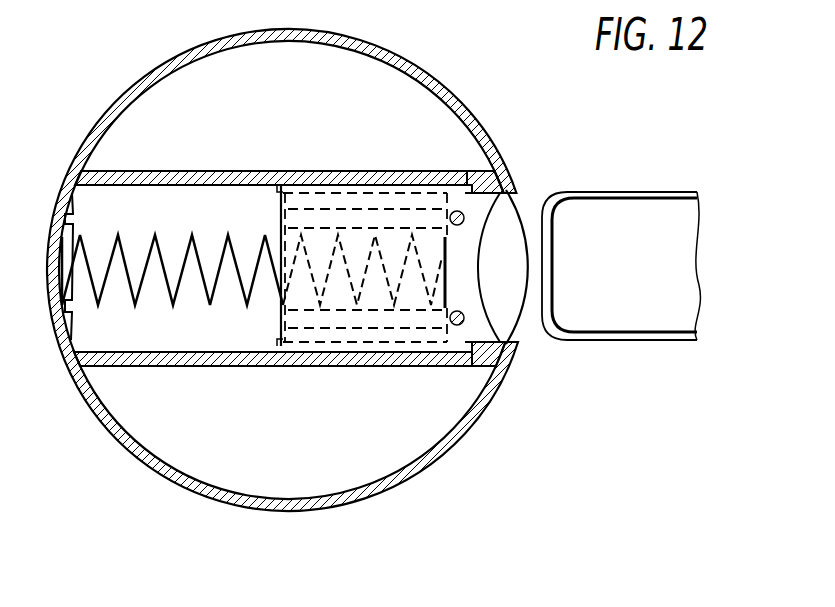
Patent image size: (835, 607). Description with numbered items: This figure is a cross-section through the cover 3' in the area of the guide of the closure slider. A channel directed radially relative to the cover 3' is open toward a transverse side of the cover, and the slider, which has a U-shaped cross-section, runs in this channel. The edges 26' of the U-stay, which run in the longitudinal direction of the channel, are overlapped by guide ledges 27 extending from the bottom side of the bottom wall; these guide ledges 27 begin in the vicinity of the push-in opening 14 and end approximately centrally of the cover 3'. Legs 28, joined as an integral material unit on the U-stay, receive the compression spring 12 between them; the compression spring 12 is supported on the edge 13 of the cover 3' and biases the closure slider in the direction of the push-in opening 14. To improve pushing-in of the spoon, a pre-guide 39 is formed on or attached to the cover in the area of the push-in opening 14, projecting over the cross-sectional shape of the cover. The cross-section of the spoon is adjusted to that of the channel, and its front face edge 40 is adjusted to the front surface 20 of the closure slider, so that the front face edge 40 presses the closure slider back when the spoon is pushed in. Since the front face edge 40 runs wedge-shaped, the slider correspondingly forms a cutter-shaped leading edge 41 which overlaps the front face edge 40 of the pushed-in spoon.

The cover 3' is at (282, 300).
The compression spring 12 is at (200, 287).
The edge 13 is at (50, 285).
The push-in opening 14 is at (520, 197).
The front surface 20 is at (490, 275).
The edges 26' is at (295, 295).
The guide ledges 27 is at (281, 186).
The legs 28 is at (293, 212).
The pre-guide 39 is at (500, 342).
The front face edge 40 is at (548, 243).
The cutter-shaped leading edge 41 is at (480, 265).